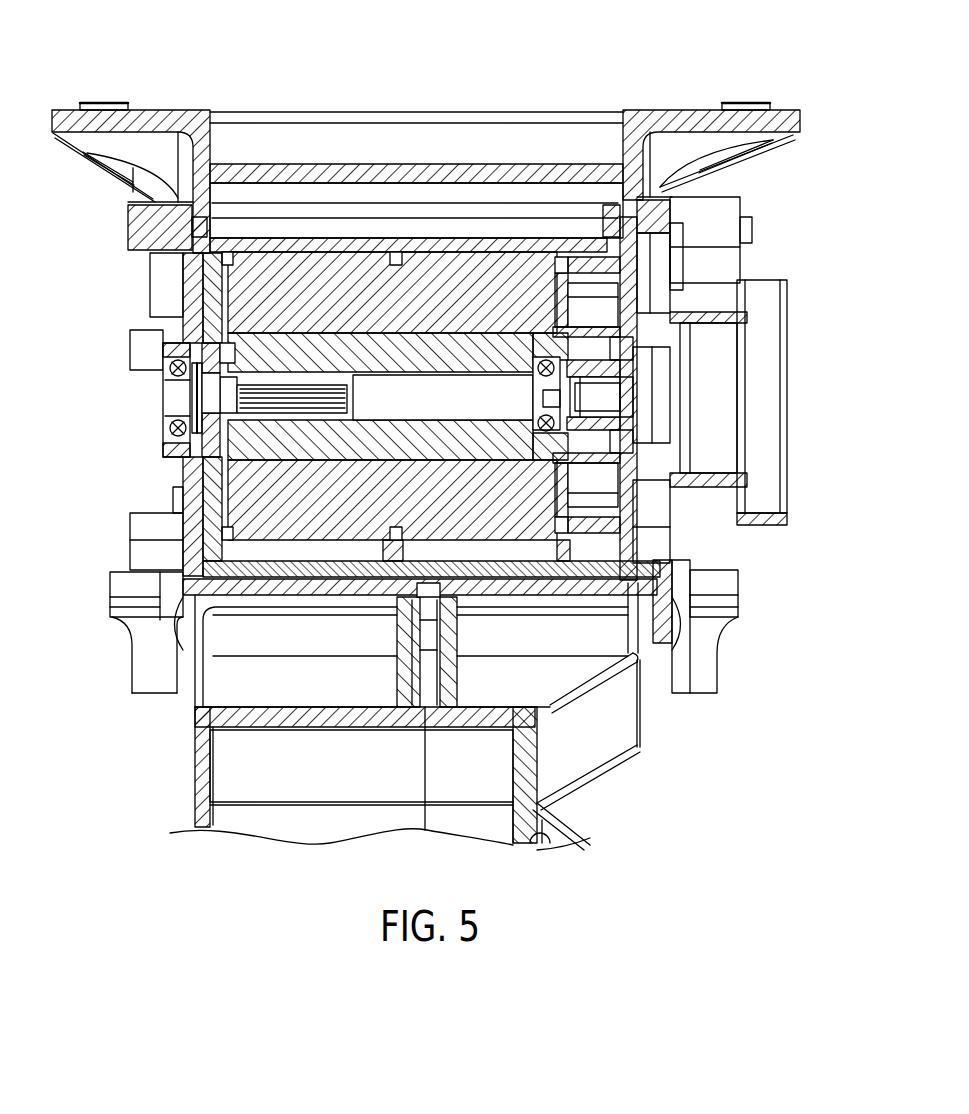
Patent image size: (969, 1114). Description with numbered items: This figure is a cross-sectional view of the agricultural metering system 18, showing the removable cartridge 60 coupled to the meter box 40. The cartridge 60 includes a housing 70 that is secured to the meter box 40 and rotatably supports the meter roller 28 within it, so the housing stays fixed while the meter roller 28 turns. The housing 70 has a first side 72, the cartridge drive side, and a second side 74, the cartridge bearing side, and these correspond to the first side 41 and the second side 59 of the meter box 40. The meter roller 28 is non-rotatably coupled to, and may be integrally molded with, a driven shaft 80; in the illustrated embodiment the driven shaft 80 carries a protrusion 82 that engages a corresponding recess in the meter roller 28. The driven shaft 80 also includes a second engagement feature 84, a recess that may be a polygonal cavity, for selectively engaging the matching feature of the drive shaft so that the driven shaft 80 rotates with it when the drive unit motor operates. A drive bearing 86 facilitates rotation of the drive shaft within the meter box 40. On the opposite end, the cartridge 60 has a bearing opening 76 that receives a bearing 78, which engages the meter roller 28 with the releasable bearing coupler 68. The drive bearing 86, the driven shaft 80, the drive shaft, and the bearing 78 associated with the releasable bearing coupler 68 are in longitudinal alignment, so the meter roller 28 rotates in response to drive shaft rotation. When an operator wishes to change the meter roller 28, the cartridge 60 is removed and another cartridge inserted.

The metering system 18 is at (697, 46).
The protrusion 82 is at (396, 332).
The meter roller 28 is at (258, 302).
The first side 72 is at (200, 315).
The driven shaft 80 is at (255, 363).
The drive bearing 86 is at (176, 378).
The second engagement feature 84 is at (262, 415).
The cartridge 60 is at (206, 494).
The housing 70 is at (213, 520).
The first side 41 is at (116, 626).
The bearing 78 is at (540, 410).
The bearing opening 76 is at (652, 400).
The releasable bearing coupler 68 is at (794, 401).
The second side 74 is at (630, 497).
The meter box 40 is at (670, 530).
The second side 59 is at (749, 656).